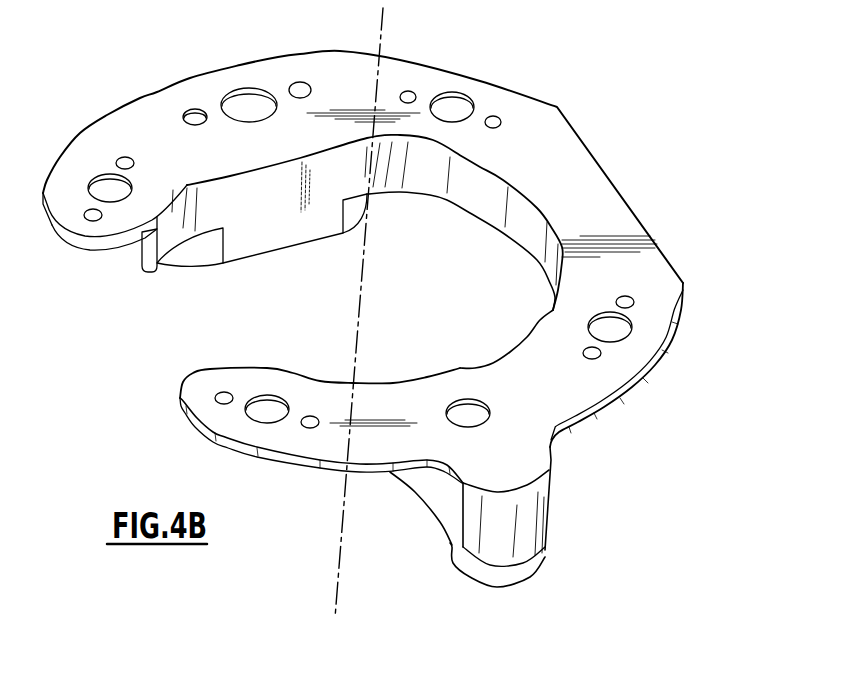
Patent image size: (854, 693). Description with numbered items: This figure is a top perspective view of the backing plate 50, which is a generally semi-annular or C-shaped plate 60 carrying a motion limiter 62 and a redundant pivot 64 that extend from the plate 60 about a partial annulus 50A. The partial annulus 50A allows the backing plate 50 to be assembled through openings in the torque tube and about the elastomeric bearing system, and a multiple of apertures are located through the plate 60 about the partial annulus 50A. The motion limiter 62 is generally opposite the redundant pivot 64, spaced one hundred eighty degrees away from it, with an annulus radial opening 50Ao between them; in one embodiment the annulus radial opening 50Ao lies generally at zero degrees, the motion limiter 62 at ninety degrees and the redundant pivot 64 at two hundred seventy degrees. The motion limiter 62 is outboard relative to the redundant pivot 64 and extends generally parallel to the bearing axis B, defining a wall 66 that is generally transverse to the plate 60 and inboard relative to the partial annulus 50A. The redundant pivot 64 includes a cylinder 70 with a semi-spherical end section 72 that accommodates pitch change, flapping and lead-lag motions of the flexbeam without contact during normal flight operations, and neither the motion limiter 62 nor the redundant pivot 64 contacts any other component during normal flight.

The backing plate 50 is at (716, 181).
The partial annulus 50A is at (480, 288).
The annulus radial opening 50Ao is at (192, 353).
The plate 60 is at (608, 382).
The motion limiter 62 is at (282, 221).
The redundant pivot 64 is at (500, 547).
The wall 66 is at (250, 228).
The cylinder 70 is at (533, 510).
The semi-spherical end section 72 is at (488, 580).
The bearing axis B is at (343, 552).